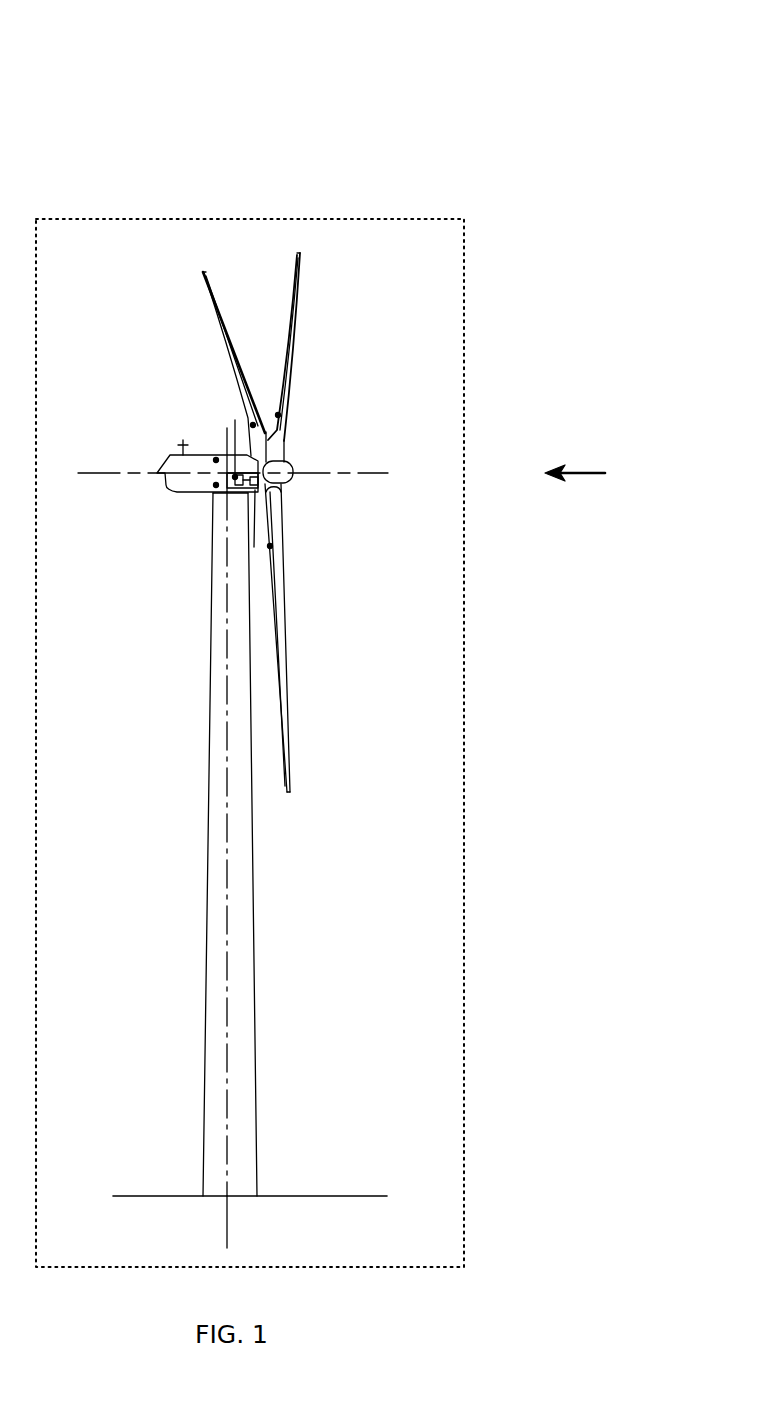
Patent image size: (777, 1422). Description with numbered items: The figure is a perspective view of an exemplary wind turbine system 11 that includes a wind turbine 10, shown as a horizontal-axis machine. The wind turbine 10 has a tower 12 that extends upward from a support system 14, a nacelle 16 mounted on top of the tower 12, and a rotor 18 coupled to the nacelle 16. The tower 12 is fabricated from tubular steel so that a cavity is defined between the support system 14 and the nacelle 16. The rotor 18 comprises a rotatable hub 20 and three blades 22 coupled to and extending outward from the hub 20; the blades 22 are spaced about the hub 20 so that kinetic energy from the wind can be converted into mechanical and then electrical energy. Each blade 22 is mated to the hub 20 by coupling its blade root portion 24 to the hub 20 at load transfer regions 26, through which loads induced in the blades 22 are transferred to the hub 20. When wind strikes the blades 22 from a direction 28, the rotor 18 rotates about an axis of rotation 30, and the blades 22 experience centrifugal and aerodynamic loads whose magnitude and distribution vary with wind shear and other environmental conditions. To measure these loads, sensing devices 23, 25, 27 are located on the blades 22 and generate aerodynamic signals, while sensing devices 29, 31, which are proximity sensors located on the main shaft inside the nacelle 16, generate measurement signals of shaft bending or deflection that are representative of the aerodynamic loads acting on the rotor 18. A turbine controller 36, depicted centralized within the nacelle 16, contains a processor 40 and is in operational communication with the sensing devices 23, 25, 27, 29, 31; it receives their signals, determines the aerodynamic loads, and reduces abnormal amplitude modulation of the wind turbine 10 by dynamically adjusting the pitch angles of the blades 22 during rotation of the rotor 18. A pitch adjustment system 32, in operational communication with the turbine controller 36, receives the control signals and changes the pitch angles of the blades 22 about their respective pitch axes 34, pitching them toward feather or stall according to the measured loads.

The wind turbine 10 is at (464, 745).
The wind turbine system 11 is at (523, 75).
The tower 12 is at (207, 945).
The support system 14 is at (157, 1196).
The nacelle 16 is at (177, 492).
The rotor 18 is at (322, 330).
The hub 20 is at (291, 466).
The blade 22 is at (222, 322).
The sensing device 23 is at (253, 425).
The blade root portion 24 is at (276, 560).
The sensing device 25 is at (278, 415).
The load transfer region 26 is at (284, 486).
The sensing device 27 is at (270, 546).
The direction 28 is at (580, 472).
The sensing device 29 is at (216, 460).
The axis of rotation 30 is at (360, 474).
The sensing device 31 is at (215, 495).
The pitch adjustment system 32 is at (254, 547).
The pitch axis 34 is at (203, 272).
The turbine controller 36 is at (216, 485).
The processor 40 is at (235, 420).